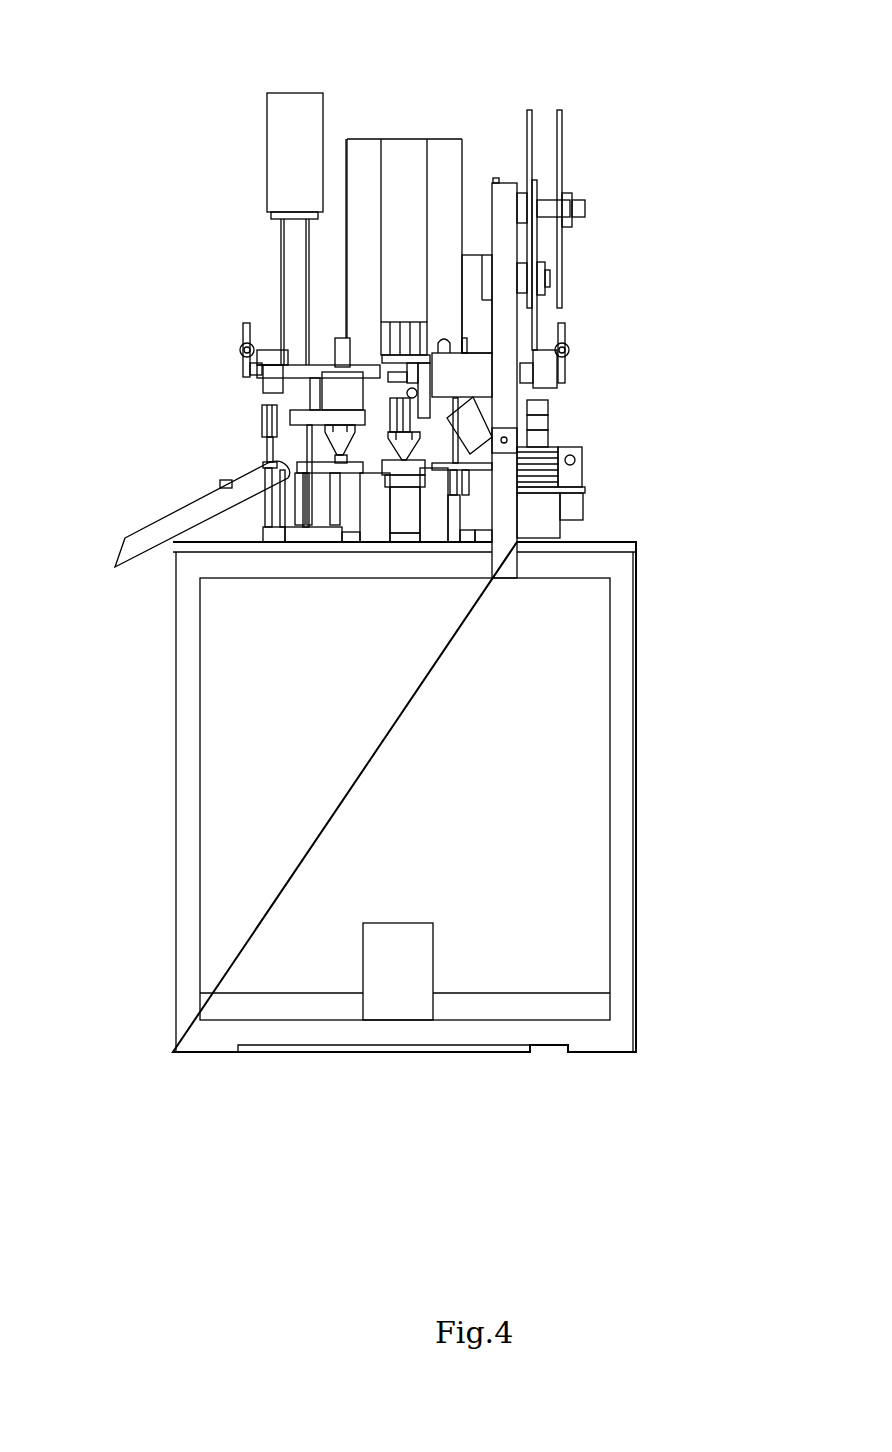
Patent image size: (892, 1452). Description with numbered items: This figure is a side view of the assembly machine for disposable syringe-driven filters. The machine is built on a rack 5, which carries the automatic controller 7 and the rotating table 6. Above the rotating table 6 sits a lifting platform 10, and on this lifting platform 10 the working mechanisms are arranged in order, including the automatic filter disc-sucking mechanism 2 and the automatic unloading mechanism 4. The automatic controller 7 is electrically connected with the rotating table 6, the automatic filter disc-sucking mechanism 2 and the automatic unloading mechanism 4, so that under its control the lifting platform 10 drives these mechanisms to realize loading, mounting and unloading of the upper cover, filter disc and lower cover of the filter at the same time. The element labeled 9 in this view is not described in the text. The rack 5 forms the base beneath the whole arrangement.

The automatic filter disc-sucking mechanism 2 is at (612, 304).
The automatic unloading mechanism 4 is at (201, 390).
The rack 5 is at (369, 797).
The rotating table 6 is at (246, 531).
The automatic controller 7 is at (249, 194).
The discharge chute 9 is at (206, 551).
The lifting platform 10 is at (457, 186).